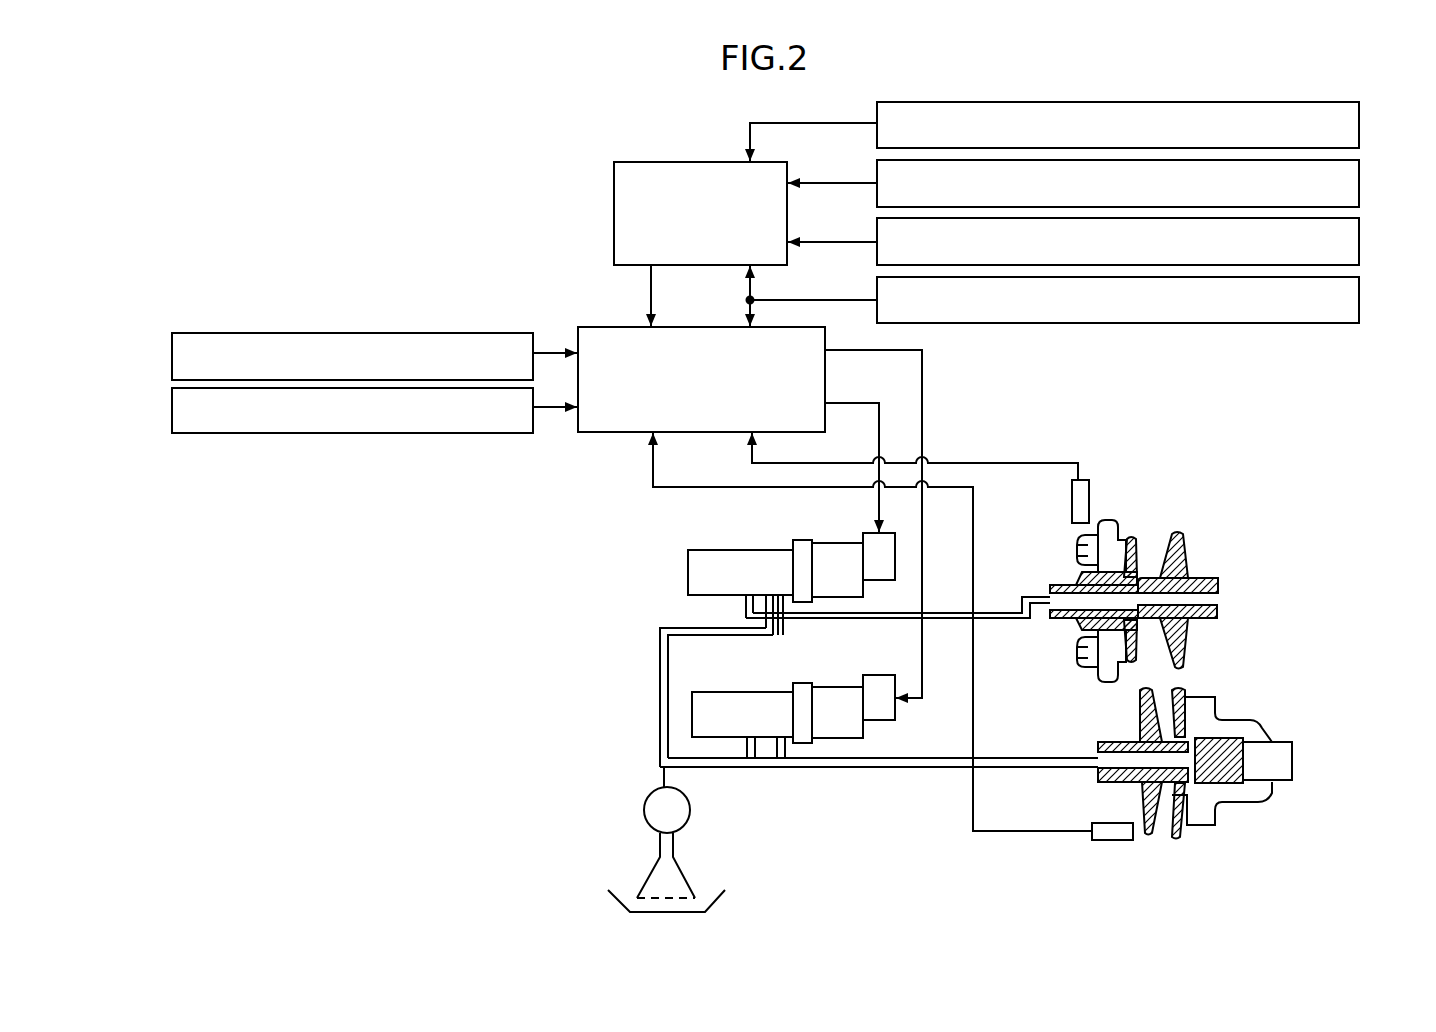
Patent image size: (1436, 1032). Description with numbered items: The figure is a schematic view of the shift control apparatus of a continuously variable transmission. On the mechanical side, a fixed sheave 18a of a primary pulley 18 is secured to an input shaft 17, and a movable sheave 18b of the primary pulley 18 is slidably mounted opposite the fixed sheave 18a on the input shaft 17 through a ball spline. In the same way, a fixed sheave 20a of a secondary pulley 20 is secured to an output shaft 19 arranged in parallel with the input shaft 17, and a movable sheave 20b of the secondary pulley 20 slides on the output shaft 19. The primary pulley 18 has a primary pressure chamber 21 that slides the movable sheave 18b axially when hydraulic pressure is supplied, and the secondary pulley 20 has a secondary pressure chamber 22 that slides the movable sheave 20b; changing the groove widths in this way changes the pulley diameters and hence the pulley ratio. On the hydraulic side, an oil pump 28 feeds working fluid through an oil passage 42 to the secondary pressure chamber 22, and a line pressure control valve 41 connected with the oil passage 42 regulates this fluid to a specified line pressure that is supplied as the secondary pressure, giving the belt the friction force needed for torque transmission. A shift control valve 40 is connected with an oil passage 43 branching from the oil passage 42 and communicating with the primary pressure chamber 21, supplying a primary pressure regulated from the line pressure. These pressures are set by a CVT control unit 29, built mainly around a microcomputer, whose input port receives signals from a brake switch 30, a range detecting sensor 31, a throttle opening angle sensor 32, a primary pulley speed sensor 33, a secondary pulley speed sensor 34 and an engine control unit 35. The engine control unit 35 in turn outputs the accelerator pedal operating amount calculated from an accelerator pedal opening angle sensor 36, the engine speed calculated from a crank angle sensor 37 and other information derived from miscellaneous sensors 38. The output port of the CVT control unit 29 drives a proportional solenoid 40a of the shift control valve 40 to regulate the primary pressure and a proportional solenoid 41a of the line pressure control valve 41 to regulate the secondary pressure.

The input shaft 17 is at (1215, 580).
The primary pulley 18 is at (1158, 576).
The fixed sheave 18a is at (1178, 530).
The movable sheave 18b is at (1134, 540).
The output shaft 19 is at (1292, 760).
The secondary pulley 20 is at (1218, 765).
The fixed sheave 20a is at (1148, 840).
The movable sheave 20b is at (1182, 690).
The primary pressure chamber 21 is at (1108, 520).
The secondary pressure chamber 22 is at (1202, 820).
The oil pump 28 is at (644, 811).
The CVT control unit 29 is at (603, 432).
The brake switch 30 is at (172, 357).
The range detecting sensor 31 is at (172, 410).
The throttle opening angle sensor 32 is at (1359, 300).
The primary pulley speed sensor 33 is at (1072, 503).
The secondary pulley speed sensor 34 is at (1103, 845).
The engine control unit 35 is at (614, 213).
The accelerator pedal opening angle sensor 36 is at (1359, 123).
The crank angle sensor 37 is at (1359, 183).
The miscellaneous sensors 38 is at (1359, 241).
The shift control valve 40 is at (741, 550).
The proportional solenoid 40a is at (866, 540).
The line pressure control valve 41 is at (835, 692).
The proportional solenoid 41a is at (882, 676).
The oil passage 42 is at (862, 768).
The oil passage 43 is at (660, 678).